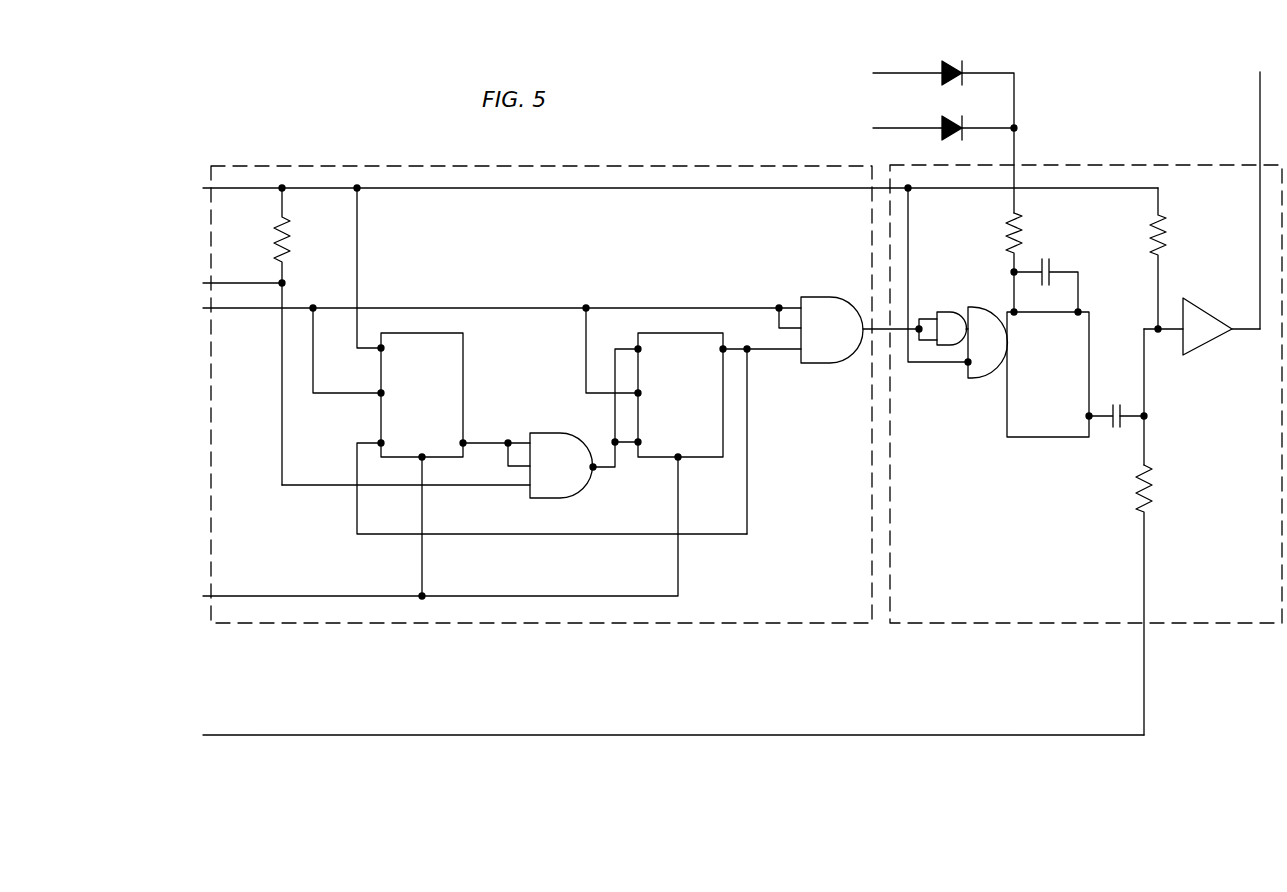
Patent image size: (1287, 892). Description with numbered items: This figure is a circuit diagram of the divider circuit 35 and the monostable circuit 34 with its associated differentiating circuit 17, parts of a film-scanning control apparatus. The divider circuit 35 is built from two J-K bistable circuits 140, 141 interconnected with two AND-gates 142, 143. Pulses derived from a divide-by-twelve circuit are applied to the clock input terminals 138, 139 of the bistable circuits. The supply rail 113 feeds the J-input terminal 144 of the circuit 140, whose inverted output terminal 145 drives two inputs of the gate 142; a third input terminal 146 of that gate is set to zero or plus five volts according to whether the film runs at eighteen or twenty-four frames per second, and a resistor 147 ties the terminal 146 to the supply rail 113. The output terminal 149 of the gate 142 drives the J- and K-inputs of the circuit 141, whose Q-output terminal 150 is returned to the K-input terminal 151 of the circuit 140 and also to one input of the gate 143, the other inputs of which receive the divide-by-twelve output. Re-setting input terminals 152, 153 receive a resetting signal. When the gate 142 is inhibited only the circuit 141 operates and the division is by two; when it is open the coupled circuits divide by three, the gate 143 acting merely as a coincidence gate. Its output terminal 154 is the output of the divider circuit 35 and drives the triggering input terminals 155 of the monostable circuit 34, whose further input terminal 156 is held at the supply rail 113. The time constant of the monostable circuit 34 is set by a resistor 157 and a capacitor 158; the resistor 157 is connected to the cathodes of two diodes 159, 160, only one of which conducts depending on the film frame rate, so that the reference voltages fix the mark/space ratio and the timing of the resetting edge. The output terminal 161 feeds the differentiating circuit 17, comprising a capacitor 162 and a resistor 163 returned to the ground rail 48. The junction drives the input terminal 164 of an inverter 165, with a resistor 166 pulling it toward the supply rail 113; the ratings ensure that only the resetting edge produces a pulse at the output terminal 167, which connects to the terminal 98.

The supply rail 113 is at (243, 188).
The resistor 147 is at (292, 239).
The J-input terminal 144 is at (362, 352).
The clock input terminal 138 is at (360, 396).
The J-K bistable circuit 140 is at (422, 396).
The K-input terminal 151 is at (359, 440).
The re-setting input terminal 152 is at (418, 470).
The Q-bar output terminal 145 is at (480, 435).
The AND-gate 142 is at (563, 465).
The third input terminal 146 is at (472, 490).
The clock input terminal 139 is at (600, 374).
The J-K bistable circuit 141 is at (680, 396).
The output terminal 149 is at (605, 470).
The re-setting input terminal 153 is at (680, 490).
The Q-output terminal 150 is at (774, 354).
The AND-gate 143 is at (832, 330).
The output terminal 154 is at (864, 306).
The diode 160 is at (938, 86).
The diode 159 is at (938, 139).
The resistor 157 is at (1025, 203).
The capacitor 158 is at (1049, 260).
The triggering input terminals 155 is at (920, 312).
The further input terminal 156 is at (936, 367).
The monostable circuit 34 is at (991, 421).
The output terminal 161 is at (1110, 400).
The capacitor 162 is at (1118, 430).
The differentiating circuit 17 is at (1127, 470).
The resistor 163 is at (1152, 498).
The input terminal 164 is at (1168, 332).
The resistor 166 is at (1168, 235).
The output terminal 167 is at (1240, 316).
The inverter 165 is at (1216, 340).
The terminal 98 is at (1259, 112).
The divider circuit 35 is at (622, 626).
The ground rail 48 is at (266, 732).